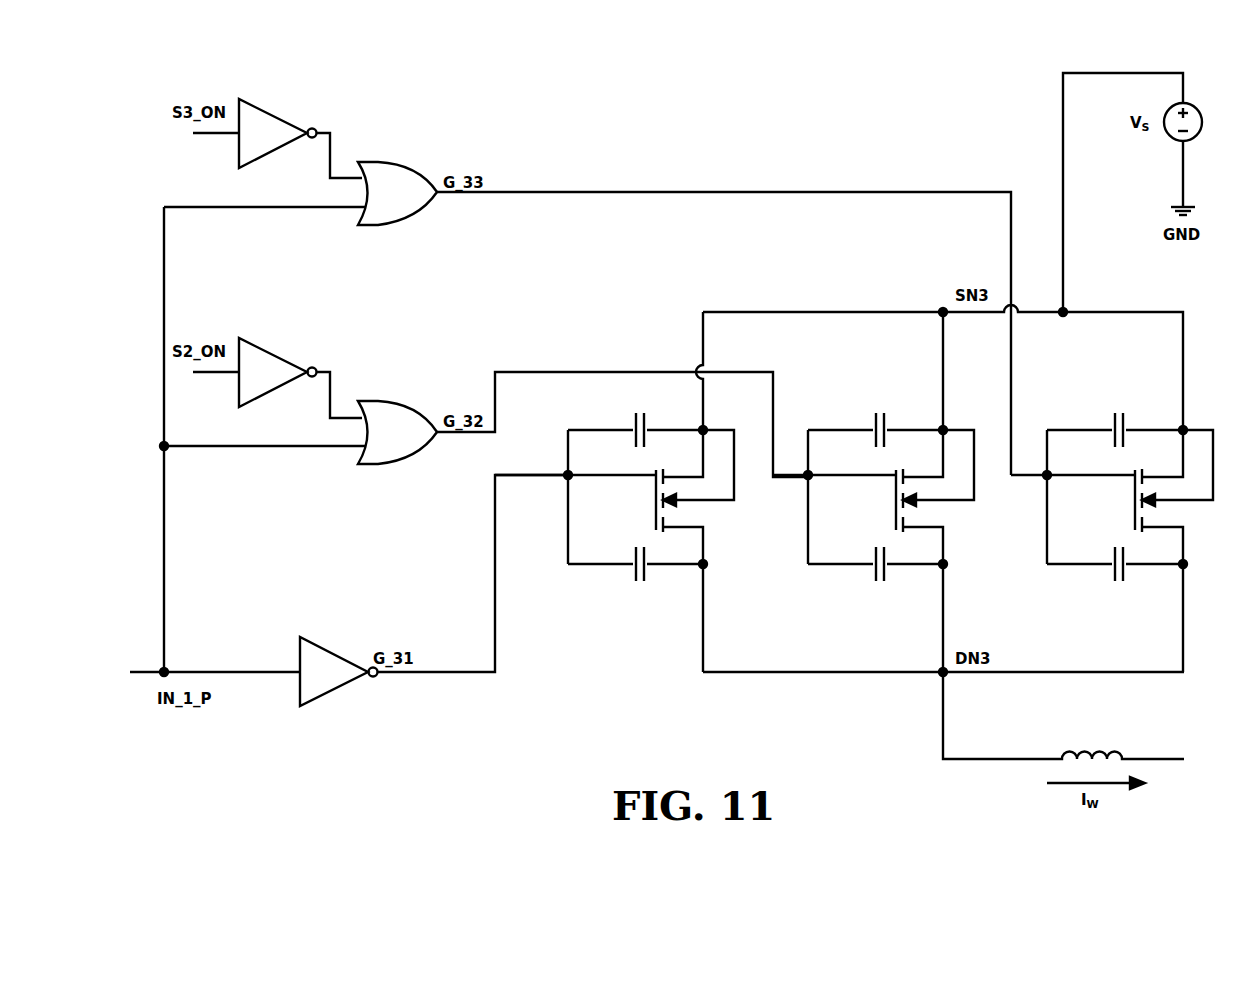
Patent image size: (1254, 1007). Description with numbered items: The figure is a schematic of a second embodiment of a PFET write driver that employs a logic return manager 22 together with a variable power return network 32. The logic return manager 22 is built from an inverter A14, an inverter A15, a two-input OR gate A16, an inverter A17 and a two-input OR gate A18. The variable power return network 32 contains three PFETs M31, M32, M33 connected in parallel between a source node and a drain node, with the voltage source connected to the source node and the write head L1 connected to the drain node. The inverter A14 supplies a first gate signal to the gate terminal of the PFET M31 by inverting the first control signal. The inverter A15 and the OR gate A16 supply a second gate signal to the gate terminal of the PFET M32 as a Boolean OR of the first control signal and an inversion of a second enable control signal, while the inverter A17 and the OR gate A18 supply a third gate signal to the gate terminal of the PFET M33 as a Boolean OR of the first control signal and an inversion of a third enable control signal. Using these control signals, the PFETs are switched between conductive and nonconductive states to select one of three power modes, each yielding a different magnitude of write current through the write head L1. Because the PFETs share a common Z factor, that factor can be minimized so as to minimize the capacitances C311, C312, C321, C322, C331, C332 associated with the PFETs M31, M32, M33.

The logic return manager 22 is at (513, 144).
The variable power return network 32 is at (667, 275).
The inverter A14 is at (254, 682).
The inverter A15 is at (277, 374).
The two-input OR gate A16 is at (397, 444).
The inverter A17 is at (277, 138).
The two-input OR gate A18 is at (397, 213).
The PFET M31 is at (614, 497).
The PFET M32 is at (873, 497).
The PFET M33 is at (1112, 497).
The capacitance C311 is at (635, 422).
The capacitance C312 is at (635, 576).
The capacitance C321 is at (875, 422).
The capacitance C322 is at (875, 576).
The capacitance C331 is at (1115, 422).
The capacitance C332 is at (1115, 576).
The write head L1 is at (1063, 715).